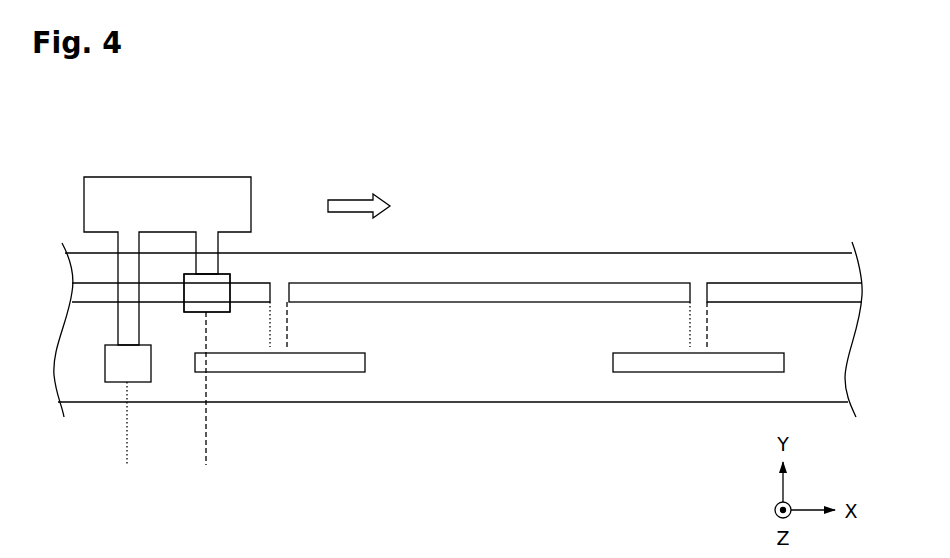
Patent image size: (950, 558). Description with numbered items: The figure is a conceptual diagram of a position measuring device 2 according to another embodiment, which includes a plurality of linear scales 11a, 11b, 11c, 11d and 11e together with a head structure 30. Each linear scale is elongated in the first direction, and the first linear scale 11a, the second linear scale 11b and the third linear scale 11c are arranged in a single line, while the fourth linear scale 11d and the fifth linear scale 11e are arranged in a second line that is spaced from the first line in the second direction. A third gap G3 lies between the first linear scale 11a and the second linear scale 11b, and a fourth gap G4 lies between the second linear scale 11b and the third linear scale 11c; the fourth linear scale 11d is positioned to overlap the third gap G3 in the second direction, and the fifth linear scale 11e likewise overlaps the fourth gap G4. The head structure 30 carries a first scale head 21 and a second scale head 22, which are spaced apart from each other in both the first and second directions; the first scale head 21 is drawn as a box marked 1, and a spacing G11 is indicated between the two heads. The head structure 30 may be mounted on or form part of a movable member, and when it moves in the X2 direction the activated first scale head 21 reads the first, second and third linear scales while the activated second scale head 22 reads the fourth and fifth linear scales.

The position measuring device 2 is at (763, 145).
The head structure 30 is at (220, 177).
The first block 1 is at (207, 293).
The first scale head 21 is at (218, 312).
The second scale head 22 is at (86, 448).
The first linear scale 11a is at (258, 290).
The second linear scale 11b is at (487, 292).
The third linear scale 11c is at (768, 292).
The fourth linear scale 11d is at (346, 365).
The fifth linear scale 11e is at (637, 367).
The third gap G3 is at (233, 334).
The fourth gap G4 is at (652, 334).
The eleventh gap G11 is at (127, 445).
The X2 direction X2 is at (355, 196).